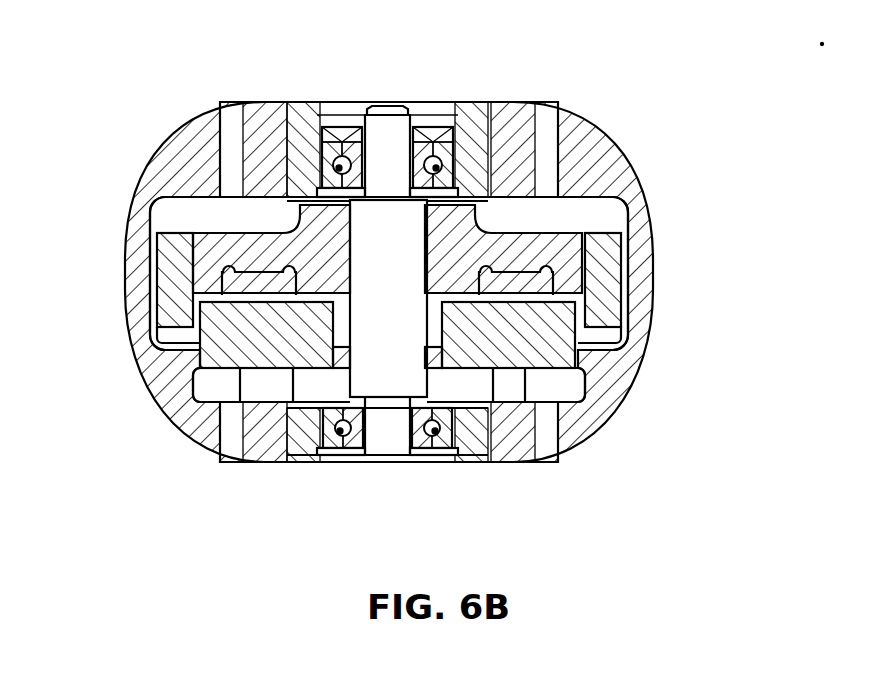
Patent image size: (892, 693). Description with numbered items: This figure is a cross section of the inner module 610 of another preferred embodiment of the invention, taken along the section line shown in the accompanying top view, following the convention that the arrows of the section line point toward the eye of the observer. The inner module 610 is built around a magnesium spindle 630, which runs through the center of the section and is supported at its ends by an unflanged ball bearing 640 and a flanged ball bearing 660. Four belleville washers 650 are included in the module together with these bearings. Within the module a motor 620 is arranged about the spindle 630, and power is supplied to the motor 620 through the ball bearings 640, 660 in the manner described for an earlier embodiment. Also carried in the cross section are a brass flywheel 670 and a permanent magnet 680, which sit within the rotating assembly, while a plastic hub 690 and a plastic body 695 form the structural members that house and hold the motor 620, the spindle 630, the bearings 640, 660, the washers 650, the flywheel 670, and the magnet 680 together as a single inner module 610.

The inner module 610 is at (618, 118).
The motor 620 is at (213, 362).
The magnesium spindle 630 is at (382, 440).
The unflanged ball bearing 640 is at (320, 118).
The belleville washers 650 is at (333, 126).
The flanged ball bearing 660 is at (337, 447).
The brass flywheel 670 is at (598, 316).
The permanent magnet 680 is at (565, 290).
The plastic hub 690 is at (626, 226).
The plastic body 695 is at (201, 442).